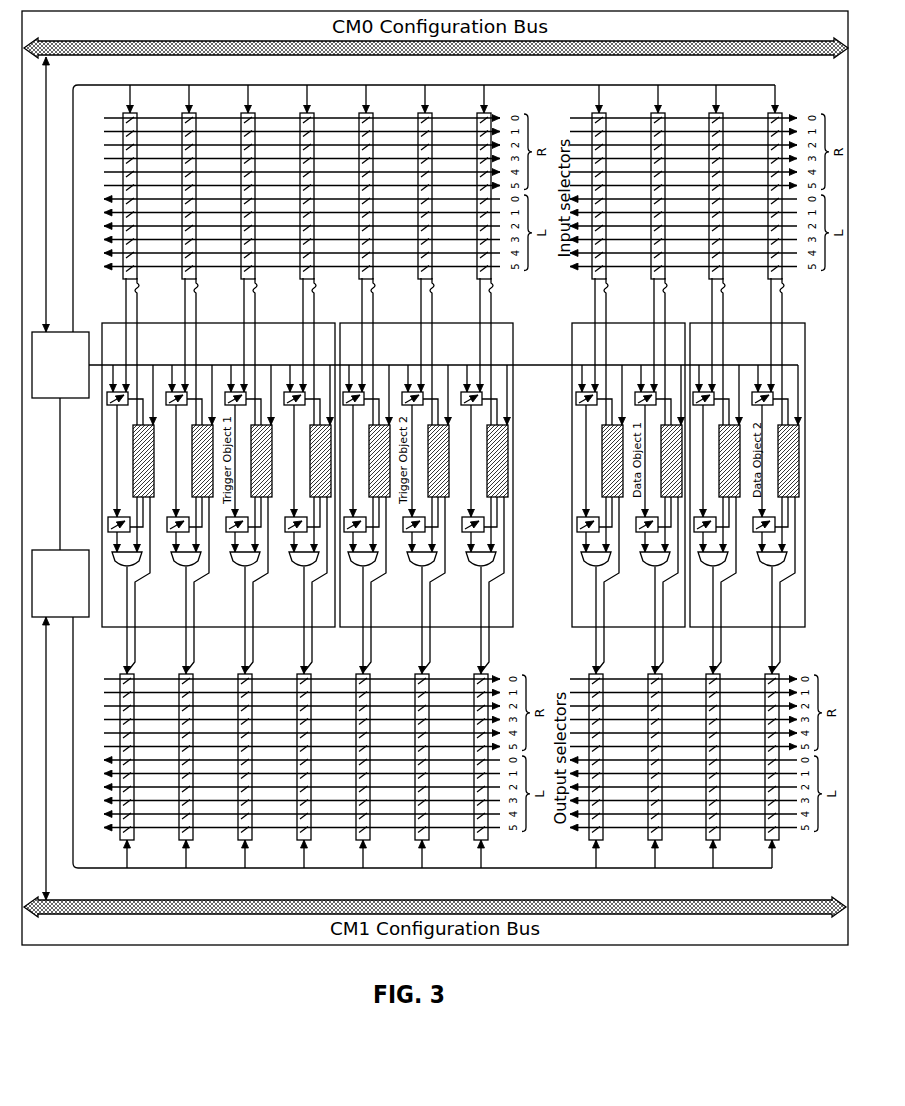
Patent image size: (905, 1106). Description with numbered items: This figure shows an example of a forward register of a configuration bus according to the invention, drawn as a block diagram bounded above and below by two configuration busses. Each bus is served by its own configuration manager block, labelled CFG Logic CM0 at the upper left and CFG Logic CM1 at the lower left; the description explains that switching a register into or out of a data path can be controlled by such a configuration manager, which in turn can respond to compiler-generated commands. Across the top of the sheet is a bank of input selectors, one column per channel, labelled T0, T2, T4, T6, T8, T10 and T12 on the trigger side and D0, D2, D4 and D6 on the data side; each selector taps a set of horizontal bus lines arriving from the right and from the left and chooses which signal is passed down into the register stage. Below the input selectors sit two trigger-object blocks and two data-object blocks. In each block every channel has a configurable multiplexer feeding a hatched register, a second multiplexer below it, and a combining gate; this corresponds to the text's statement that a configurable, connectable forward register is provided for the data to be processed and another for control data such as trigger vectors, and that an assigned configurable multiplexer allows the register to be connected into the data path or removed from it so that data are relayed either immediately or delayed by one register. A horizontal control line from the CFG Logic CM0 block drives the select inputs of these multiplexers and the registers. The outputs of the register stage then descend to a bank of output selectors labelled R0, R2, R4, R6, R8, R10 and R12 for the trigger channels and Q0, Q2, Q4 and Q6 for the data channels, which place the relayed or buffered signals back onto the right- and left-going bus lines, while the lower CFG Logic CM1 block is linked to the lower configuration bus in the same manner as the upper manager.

The CFG logic CM0 is at (60, 365).
The CFG logic CM1 is at (60, 583).
The trigger input selector T0 is at (128, 476).
The trigger input selector T2 is at (187, 476).
The trigger input selector T4 is at (246, 476).
The trigger input selector T6 is at (305, 476).
The trigger input selector T8 is at (364, 476).
The trigger input selector T10 is at (423, 476).
The trigger input selector T12 is at (482, 476).
The data input selector D0 is at (597, 476).
The data input selector D2 is at (656, 476).
The data input selector D4 is at (714, 476).
The data input selector D6 is at (773, 476).
The trigger output selector R0 is at (118, 739).
The trigger output selector R2 is at (177, 739).
The trigger output selector R4 is at (236, 739).
The trigger output selector R6 is at (295, 739).
The trigger output selector R8 is at (354, 739).
The trigger output selector R10 is at (413, 736).
The trigger output selector R12 is at (472, 736).
The data output selector Q0 is at (587, 738).
The data output selector Q2 is at (646, 738).
The data output selector Q4 is at (704, 738).
The data output selector Q6 is at (763, 738).